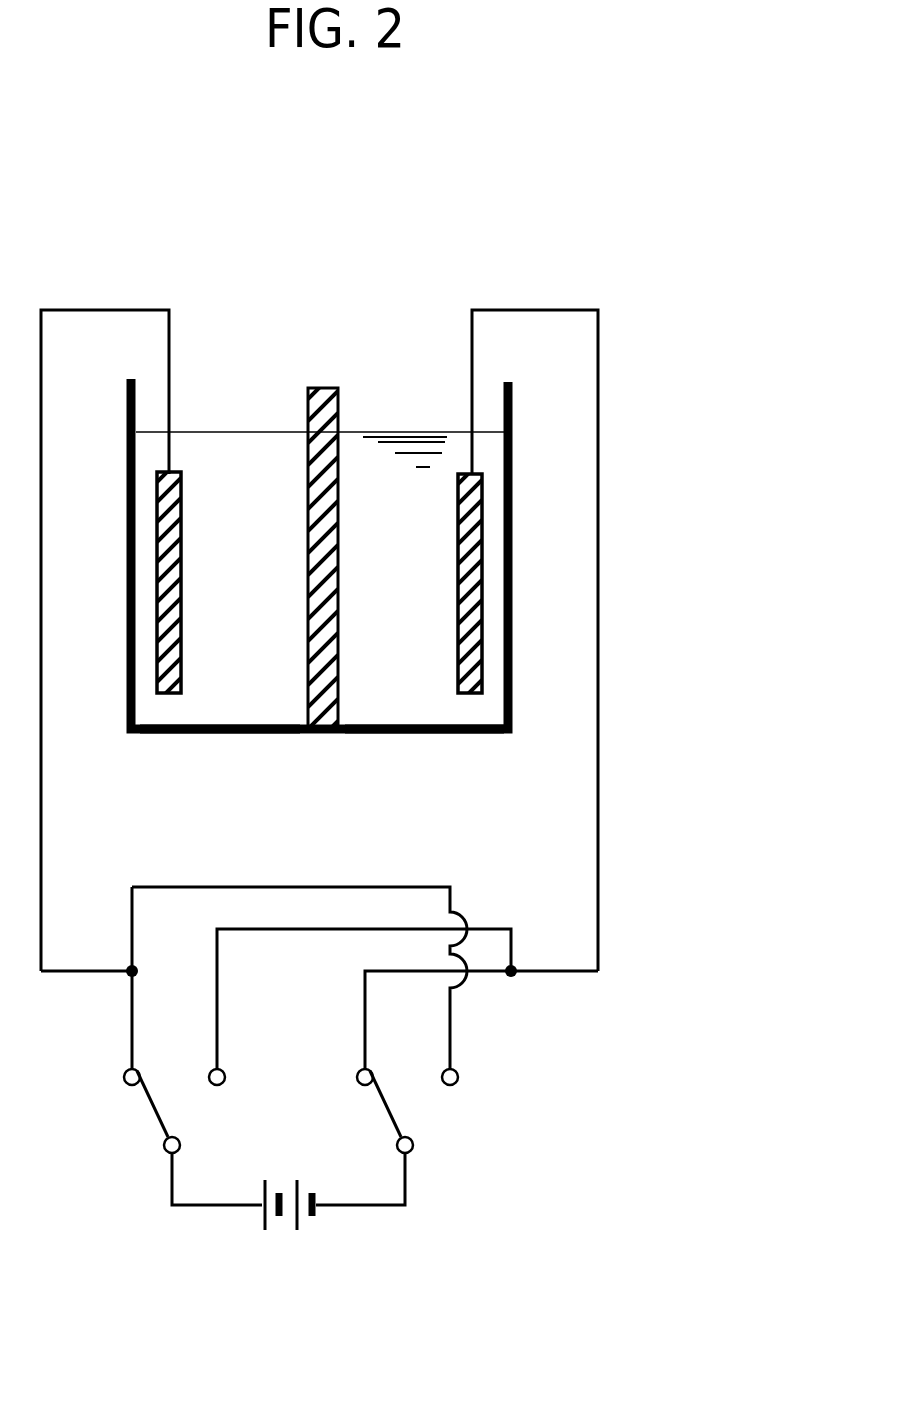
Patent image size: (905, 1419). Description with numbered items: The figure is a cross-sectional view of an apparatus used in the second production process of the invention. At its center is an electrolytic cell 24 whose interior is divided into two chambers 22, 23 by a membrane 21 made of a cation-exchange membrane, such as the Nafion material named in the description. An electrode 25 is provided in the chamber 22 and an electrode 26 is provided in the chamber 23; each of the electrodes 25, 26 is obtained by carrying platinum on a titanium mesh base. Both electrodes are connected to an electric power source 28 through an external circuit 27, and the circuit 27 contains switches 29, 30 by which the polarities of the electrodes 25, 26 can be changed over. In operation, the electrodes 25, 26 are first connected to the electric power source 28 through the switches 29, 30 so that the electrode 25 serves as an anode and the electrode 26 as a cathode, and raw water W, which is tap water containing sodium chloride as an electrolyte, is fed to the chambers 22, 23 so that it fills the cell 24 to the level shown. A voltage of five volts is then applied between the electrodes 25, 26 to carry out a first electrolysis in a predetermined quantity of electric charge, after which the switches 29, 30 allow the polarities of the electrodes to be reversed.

The membrane 21 is at (338, 581).
The chamber 22 is at (190, 733).
The chamber 23 is at (460, 735).
The electrolytic cell 24 is at (397, 298).
The electrode 25 is at (157, 572).
The electrode 26 is at (482, 580).
The circuit 27 is at (598, 690).
The electric power source 28 is at (310, 1235).
The switch 29 is at (152, 1108).
The switch 30 is at (397, 1120).
The raw water W is at (384, 443).